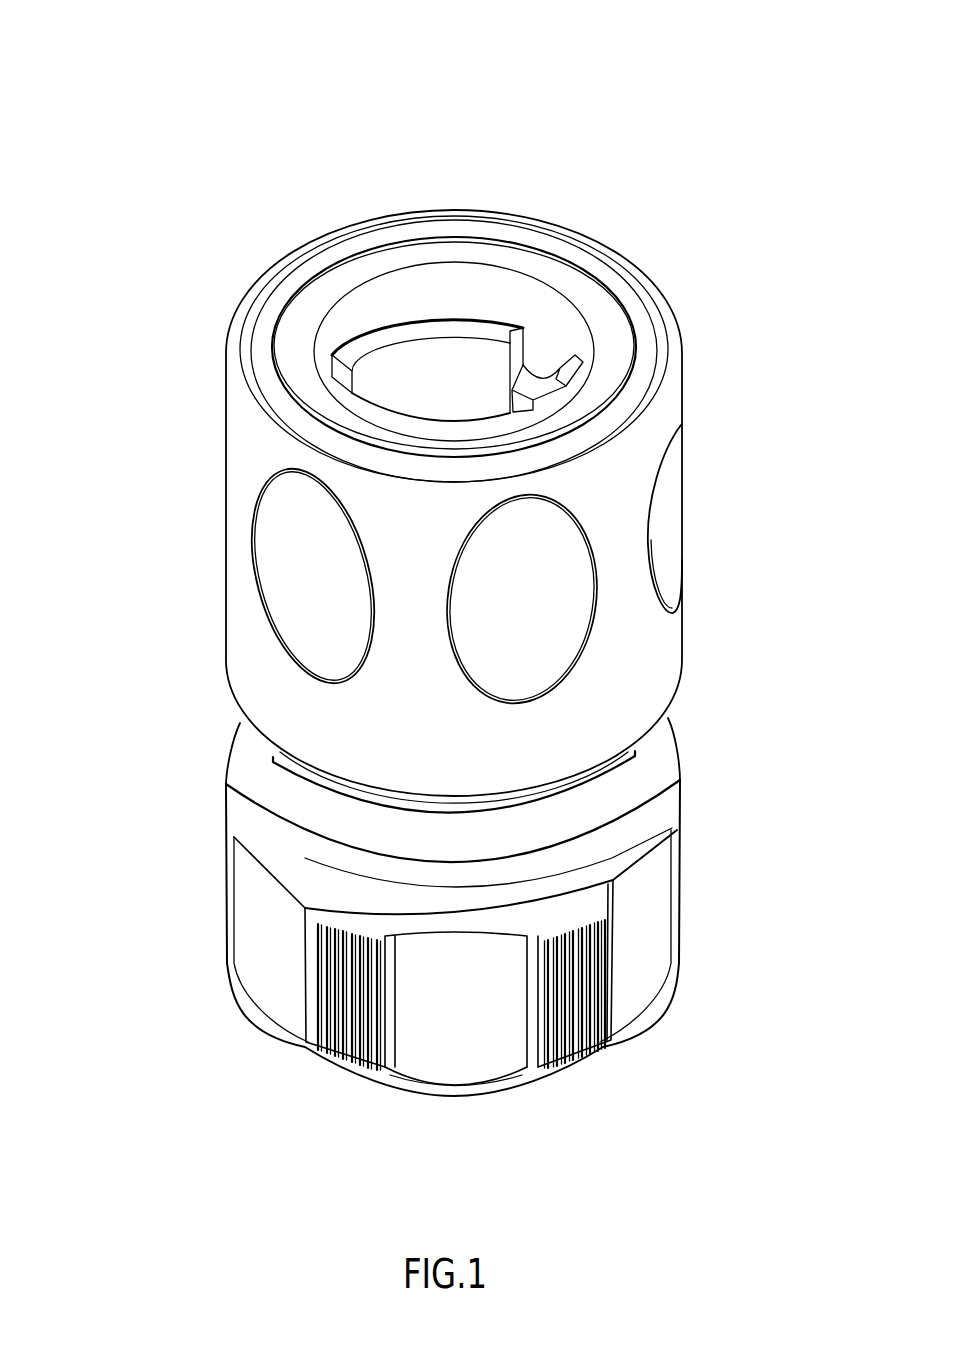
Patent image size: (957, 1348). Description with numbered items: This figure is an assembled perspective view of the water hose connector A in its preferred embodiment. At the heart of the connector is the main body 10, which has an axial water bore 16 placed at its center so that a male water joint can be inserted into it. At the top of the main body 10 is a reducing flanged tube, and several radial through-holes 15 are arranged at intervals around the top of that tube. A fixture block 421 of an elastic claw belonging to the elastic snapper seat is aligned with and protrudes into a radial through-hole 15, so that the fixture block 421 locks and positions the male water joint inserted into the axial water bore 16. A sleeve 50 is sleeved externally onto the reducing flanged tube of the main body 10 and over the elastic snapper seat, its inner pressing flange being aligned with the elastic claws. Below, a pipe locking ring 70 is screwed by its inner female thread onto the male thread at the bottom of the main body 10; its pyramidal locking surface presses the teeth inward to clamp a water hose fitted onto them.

The water hose connector A is at (450, 548).
The main body 10 is at (700, 770).
The radial through-hole 15 is at (531, 387).
The axial water bore 16 is at (424, 385).
The sleeve 50 is at (172, 496).
The pipe locking ring 70 is at (190, 913).
The fixture block 421 is at (512, 391).